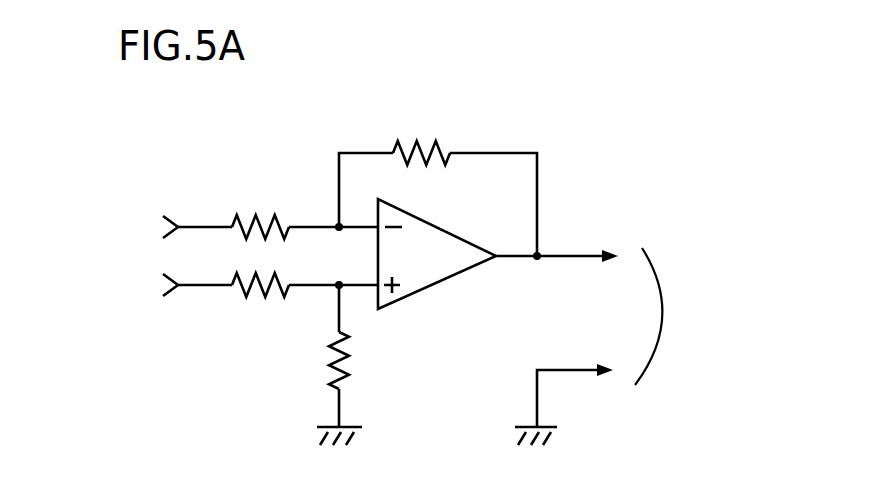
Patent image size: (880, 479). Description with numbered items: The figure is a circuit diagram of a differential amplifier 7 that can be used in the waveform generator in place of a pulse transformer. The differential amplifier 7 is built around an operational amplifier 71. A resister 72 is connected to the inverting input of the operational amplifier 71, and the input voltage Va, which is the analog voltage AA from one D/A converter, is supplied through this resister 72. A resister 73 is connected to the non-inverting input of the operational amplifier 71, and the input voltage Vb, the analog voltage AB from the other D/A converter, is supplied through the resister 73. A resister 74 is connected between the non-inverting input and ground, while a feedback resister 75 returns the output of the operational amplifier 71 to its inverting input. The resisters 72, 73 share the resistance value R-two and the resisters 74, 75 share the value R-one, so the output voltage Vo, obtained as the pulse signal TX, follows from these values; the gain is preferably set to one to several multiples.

The differential amplifier 7 is at (563, 113).
The operational amplifier 71 is at (458, 275).
The resister 72 is at (238, 215).
The resister 73 is at (250, 280).
The resister 74 is at (328, 366).
The feedback resister 75 is at (438, 145).